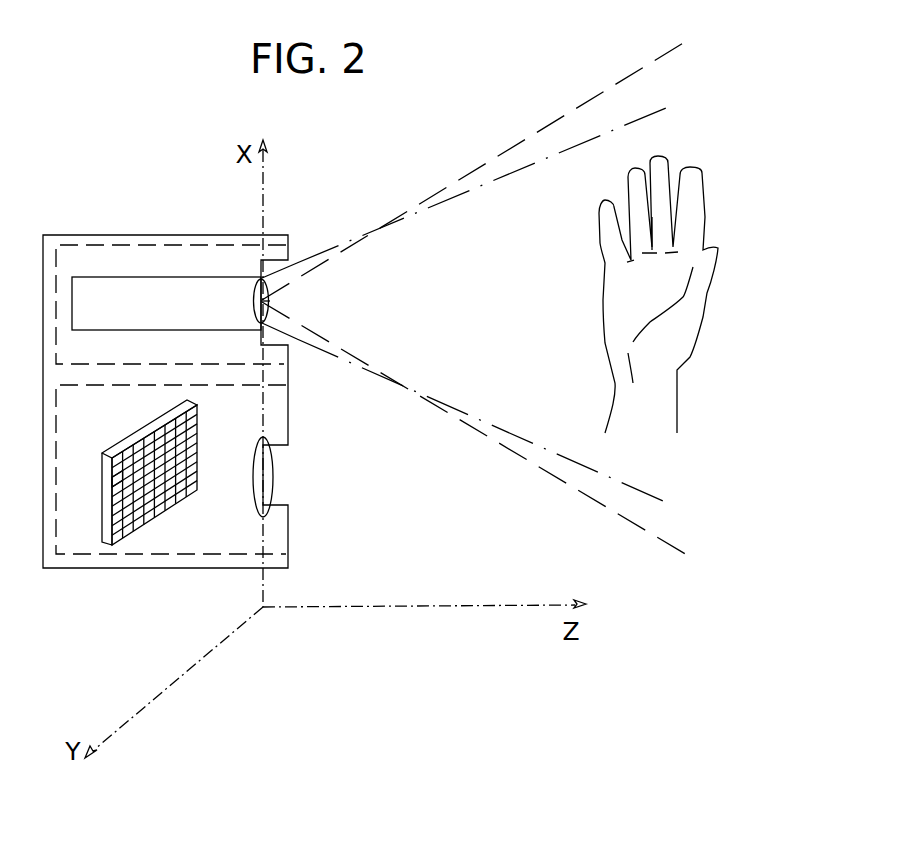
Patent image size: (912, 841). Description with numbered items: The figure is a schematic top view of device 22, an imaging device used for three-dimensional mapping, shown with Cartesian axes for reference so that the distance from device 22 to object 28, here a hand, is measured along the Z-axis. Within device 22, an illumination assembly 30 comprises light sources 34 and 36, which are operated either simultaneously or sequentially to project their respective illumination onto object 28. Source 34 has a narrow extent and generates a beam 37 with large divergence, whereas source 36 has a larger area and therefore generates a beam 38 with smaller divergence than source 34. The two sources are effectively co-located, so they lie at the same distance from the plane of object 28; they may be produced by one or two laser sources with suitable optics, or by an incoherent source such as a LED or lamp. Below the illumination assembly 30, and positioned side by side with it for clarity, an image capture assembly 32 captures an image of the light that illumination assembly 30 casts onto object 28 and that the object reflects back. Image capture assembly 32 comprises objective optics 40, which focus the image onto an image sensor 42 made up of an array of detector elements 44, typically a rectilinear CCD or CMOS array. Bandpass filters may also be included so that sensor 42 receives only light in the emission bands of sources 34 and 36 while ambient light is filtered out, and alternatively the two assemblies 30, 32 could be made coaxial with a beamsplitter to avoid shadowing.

The device 22 is at (113, 235).
The object 28 is at (705, 278).
The illumination assembly 30 is at (170, 245).
The image capture assembly 32 is at (102, 555).
The light source 34 is at (263, 301).
The light source 36 is at (252, 302).
The beam 37 is at (490, 161).
The beam 38 is at (575, 148).
The objective optics 40 is at (258, 455).
The image sensor 42 is at (135, 438).
The detector elements 44 is at (115, 494).